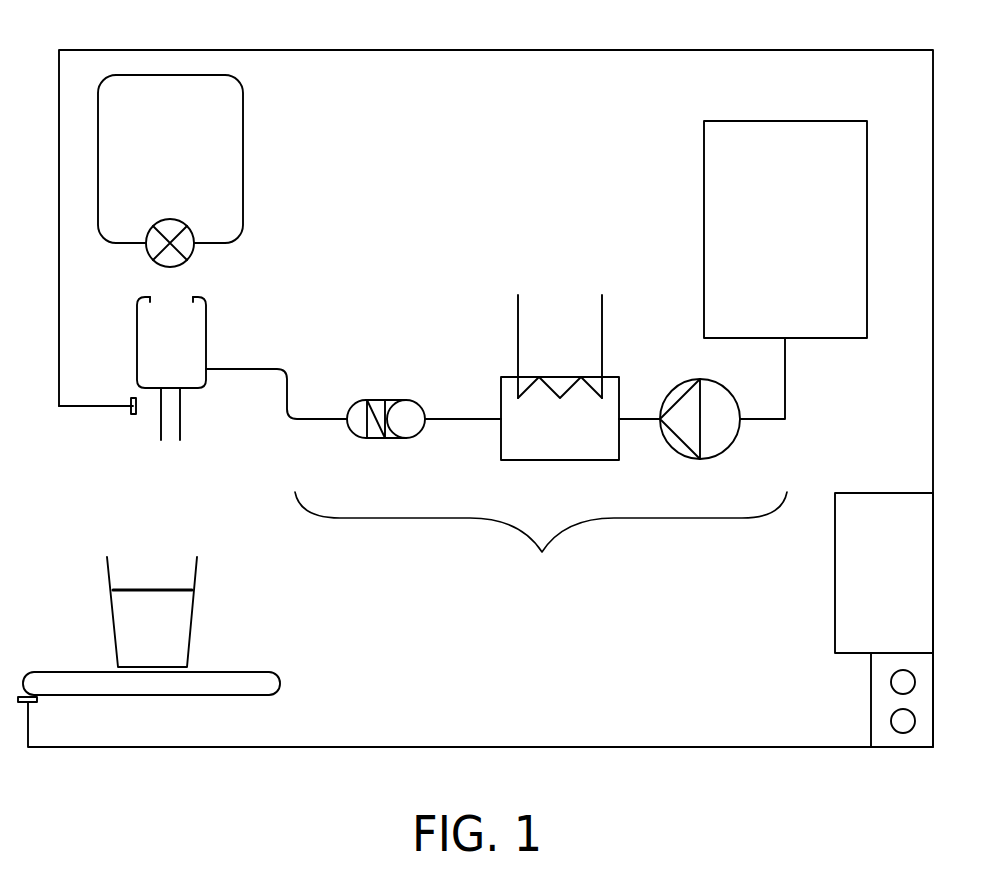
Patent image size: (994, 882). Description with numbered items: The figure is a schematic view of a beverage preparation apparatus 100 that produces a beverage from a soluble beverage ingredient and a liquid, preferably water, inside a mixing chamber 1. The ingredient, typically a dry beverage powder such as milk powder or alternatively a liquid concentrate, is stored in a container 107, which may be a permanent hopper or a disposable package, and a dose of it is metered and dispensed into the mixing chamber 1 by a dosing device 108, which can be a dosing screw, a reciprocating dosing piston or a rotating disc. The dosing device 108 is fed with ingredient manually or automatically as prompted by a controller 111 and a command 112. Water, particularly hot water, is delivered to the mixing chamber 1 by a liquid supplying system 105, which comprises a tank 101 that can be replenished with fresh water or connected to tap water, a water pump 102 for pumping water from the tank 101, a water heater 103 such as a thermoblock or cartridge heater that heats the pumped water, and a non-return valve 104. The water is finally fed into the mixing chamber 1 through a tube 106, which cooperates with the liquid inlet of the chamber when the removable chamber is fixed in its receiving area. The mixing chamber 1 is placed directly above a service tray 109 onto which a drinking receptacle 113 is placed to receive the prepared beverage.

The beverage preparation apparatus 100 is at (870, 50).
The mixing chamber 1 is at (206, 343).
The tank 101 is at (703, 230).
The water pump 102 is at (729, 436).
The water heater 103 is at (562, 461).
The non-return valve 104 is at (378, 400).
The liquid supplying system 105 is at (541, 536).
The tube 106 is at (243, 370).
The container 107 is at (243, 160).
The dosing device 108 is at (199, 255).
The service tray 109 is at (282, 684).
The controller 111 is at (834, 573).
The command 112 is at (870, 700).
The drinking receptacle 113 is at (110, 617).